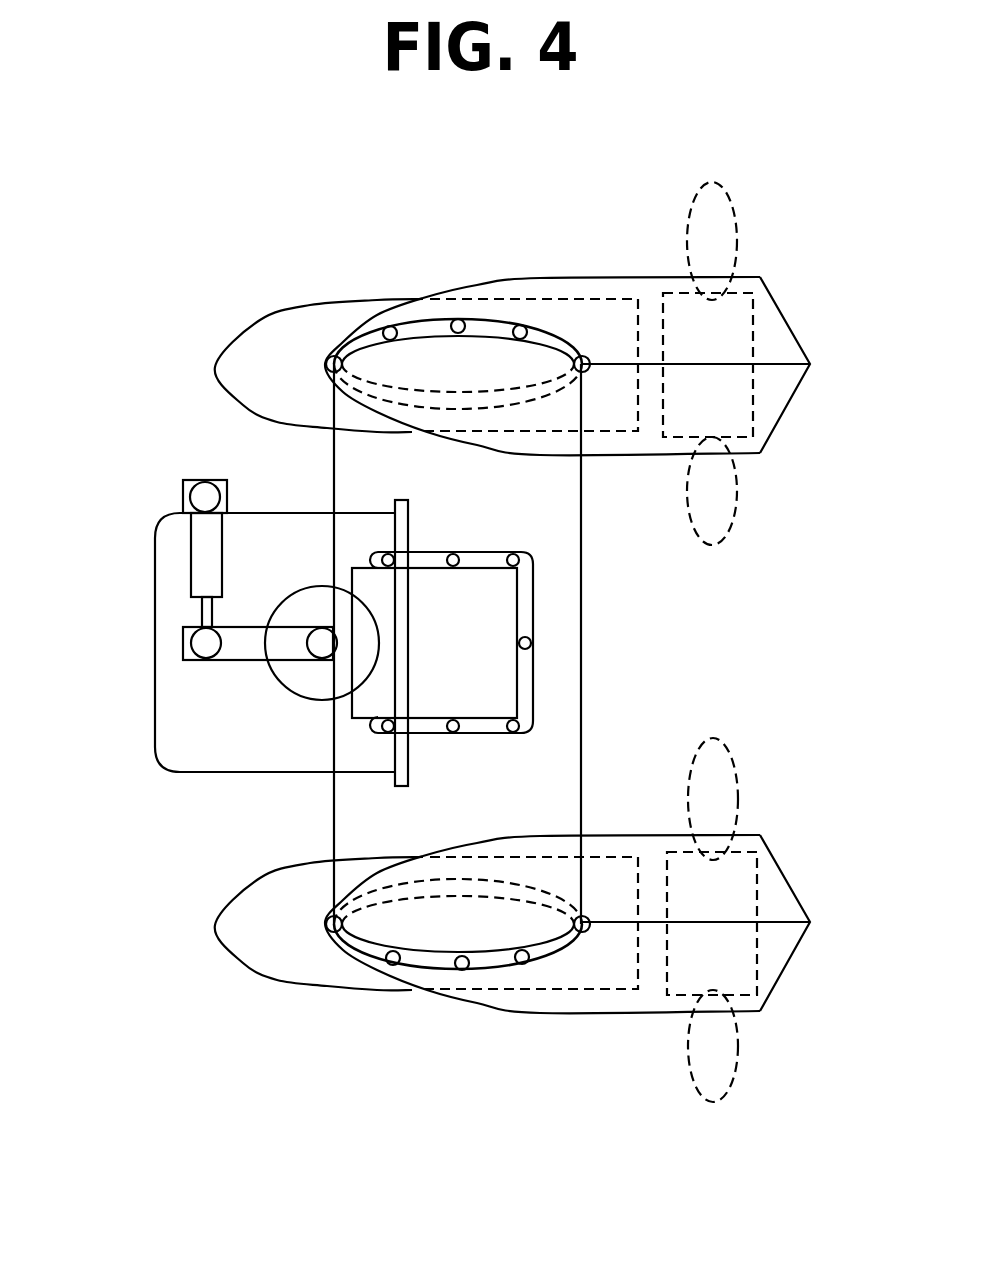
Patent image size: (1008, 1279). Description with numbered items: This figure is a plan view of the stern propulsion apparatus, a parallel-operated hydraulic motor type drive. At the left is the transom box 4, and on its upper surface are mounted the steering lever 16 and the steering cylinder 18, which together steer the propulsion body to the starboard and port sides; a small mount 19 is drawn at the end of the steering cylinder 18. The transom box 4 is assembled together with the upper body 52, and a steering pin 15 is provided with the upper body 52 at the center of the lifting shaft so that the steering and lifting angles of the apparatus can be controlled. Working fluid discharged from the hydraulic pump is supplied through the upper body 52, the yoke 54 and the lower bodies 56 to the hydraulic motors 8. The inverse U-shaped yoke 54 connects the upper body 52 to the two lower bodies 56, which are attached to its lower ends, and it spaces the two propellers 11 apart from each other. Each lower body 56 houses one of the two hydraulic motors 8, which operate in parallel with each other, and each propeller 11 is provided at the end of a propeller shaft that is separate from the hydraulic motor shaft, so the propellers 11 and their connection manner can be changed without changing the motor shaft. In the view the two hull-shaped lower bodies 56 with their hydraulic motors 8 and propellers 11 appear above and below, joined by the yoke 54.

The transom box 4 is at (160, 692).
The hydraulic motor 8 is at (605, 313).
The propeller 11 is at (737, 320).
The steering pin 15 is at (325, 660).
The steering lever 16 is at (237, 662).
The steering cylinder 18 is at (205, 551).
The cylinder mount 19 is at (200, 488).
The upper body 52 is at (505, 673).
The yoke 54 is at (565, 563).
The lower body 56 is at (270, 340).